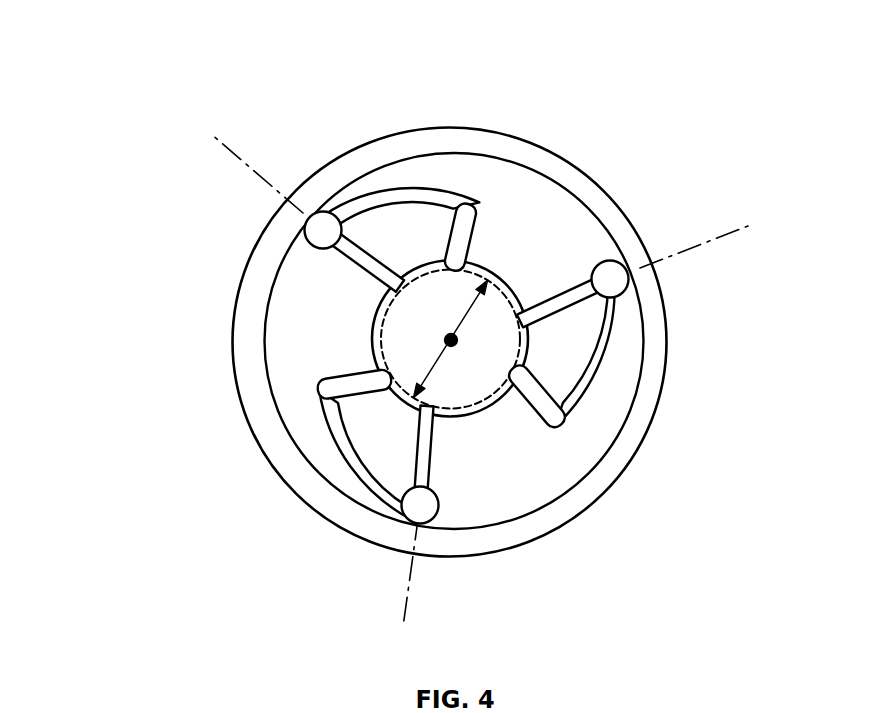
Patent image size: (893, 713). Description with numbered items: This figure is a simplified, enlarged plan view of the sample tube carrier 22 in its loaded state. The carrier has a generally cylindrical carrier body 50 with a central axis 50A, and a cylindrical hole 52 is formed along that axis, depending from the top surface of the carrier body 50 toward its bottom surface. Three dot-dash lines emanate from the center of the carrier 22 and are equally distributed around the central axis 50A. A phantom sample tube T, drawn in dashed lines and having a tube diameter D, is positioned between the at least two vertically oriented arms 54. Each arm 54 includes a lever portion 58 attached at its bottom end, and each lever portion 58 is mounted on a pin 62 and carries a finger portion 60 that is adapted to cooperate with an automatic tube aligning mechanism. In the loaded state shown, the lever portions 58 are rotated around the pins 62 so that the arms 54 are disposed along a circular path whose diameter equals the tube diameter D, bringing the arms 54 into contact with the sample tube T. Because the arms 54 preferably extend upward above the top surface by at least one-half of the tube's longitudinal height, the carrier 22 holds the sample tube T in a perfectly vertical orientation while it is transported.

The sample tube carrier 22 is at (671, 111).
The carrier body 50 is at (238, 300).
The cylindrical hole 52 is at (335, 487).
The central axis 50A is at (447, 340).
The vertically oriented arms 54 is at (473, 228).
The lever portion 58 is at (383, 193).
The finger portion 60 is at (427, 448).
The pin 62 is at (620, 283).
The sample tube T is at (492, 283).
The tube diameter D is at (437, 350).